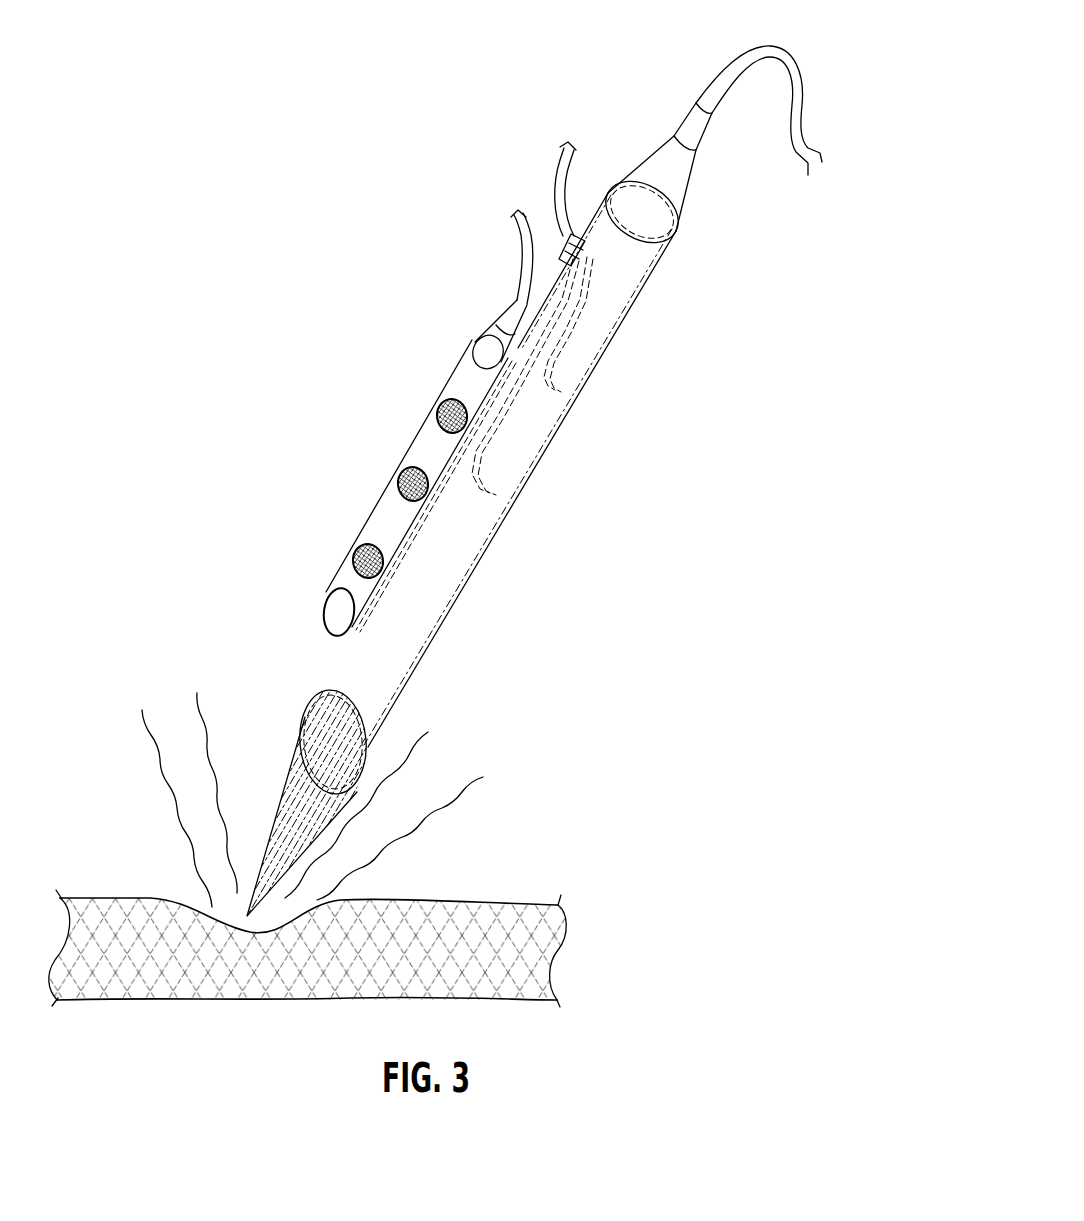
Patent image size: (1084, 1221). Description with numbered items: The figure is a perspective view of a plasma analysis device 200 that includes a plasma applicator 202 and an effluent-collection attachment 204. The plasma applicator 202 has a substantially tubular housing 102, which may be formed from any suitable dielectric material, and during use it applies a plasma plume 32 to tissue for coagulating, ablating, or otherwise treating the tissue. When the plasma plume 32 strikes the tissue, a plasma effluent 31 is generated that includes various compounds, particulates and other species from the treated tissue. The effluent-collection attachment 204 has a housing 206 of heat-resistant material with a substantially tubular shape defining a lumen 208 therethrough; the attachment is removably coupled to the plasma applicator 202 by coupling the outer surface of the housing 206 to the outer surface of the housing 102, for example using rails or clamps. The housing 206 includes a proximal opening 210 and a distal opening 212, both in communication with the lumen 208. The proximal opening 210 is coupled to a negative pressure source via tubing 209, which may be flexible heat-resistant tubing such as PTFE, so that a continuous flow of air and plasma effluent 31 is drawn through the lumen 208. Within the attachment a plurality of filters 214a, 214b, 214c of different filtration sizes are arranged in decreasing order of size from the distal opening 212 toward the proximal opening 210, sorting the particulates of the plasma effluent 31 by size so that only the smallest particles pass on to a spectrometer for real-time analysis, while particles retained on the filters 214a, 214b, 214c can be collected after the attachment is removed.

The plasma analysis device 200 is at (262, 352).
The housing 102 is at (482, 558).
The plasma applicator 202 is at (566, 428).
The effluent-collection attachment 204 is at (372, 512).
The housing 206 is at (468, 364).
The lumen 208 is at (432, 443).
The tubing 209 is at (524, 245).
The proximal opening 210 is at (484, 340).
The distal opening 212 is at (336, 610).
The filter 214a is at (358, 552).
The filter 214b is at (405, 474).
The filter 214c is at (443, 403).
The plasma plume 32 is at (305, 772).
The plasma effluent 31 is at (183, 800).